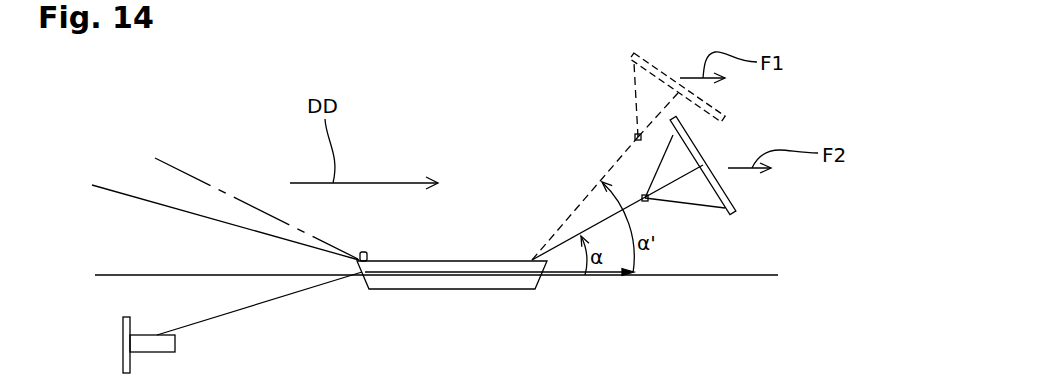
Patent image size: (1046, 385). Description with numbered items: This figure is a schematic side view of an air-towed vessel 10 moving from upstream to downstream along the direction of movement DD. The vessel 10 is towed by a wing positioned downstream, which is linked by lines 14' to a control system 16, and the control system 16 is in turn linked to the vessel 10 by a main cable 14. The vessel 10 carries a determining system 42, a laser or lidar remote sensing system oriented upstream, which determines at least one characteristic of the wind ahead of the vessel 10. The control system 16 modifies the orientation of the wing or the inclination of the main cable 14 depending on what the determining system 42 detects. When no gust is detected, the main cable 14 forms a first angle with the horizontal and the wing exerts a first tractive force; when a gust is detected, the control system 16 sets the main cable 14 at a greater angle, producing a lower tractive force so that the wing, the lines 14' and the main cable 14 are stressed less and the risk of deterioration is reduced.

The vessel 10 is at (510, 255).
The main cable 14 is at (613, 199).
The lines 14' is at (723, 160).
The control system 16 is at (635, 137).
The determining system 42 is at (367, 246).